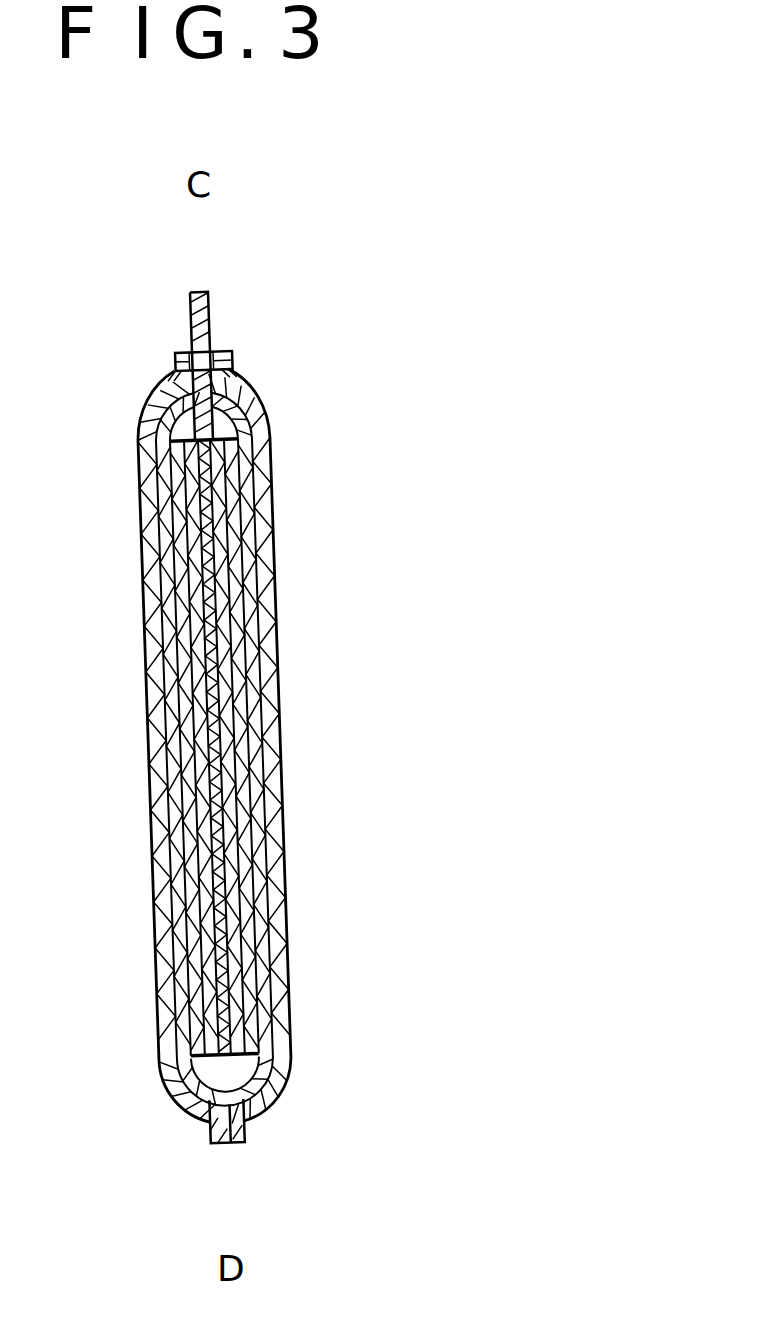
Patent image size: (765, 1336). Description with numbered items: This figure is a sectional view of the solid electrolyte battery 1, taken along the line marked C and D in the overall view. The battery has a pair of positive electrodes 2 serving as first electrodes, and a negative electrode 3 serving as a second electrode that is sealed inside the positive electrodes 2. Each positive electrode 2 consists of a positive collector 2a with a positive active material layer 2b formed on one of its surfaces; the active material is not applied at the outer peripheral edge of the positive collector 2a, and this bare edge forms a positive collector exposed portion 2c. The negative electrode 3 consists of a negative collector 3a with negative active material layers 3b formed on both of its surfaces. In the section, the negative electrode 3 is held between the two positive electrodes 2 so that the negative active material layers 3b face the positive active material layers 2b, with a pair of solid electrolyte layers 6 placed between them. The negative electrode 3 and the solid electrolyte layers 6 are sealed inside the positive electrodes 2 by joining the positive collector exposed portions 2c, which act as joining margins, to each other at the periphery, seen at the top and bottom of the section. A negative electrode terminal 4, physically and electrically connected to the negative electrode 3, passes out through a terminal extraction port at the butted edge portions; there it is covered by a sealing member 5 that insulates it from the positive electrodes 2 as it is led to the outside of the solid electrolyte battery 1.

The solid electrolyte battery 1 is at (308, 268).
The positive electrode 2 is at (262, 434).
The positive collector 2a is at (265, 518).
The positive active material layer 2b is at (253, 592).
The positive collector exposed portion 2c is at (232, 368).
The negative electrode 3 is at (207, 757).
The negative collector 3a is at (207, 673).
The negative active material layer 3b is at (200, 856).
The negative electrode terminal 4 is at (200, 297).
The sealing member 5 is at (190, 352).
The solid electrolyte layer 6 is at (247, 972).